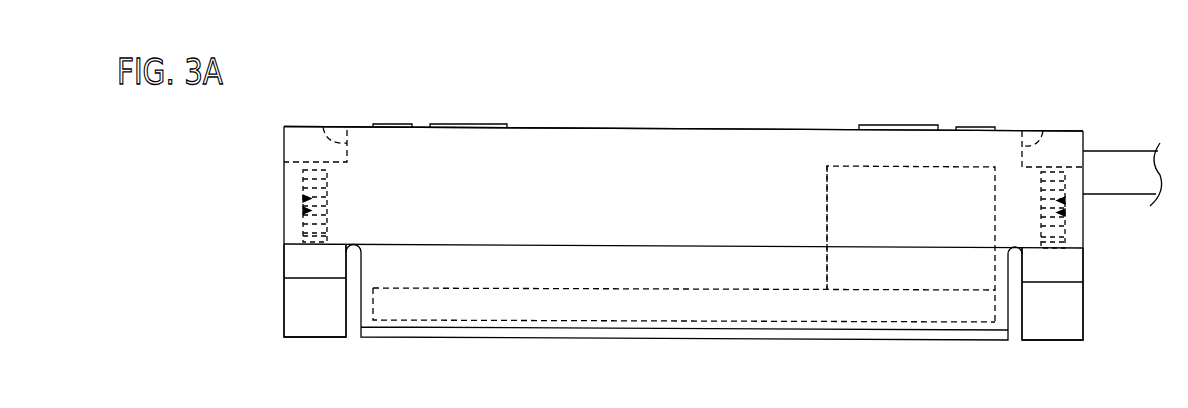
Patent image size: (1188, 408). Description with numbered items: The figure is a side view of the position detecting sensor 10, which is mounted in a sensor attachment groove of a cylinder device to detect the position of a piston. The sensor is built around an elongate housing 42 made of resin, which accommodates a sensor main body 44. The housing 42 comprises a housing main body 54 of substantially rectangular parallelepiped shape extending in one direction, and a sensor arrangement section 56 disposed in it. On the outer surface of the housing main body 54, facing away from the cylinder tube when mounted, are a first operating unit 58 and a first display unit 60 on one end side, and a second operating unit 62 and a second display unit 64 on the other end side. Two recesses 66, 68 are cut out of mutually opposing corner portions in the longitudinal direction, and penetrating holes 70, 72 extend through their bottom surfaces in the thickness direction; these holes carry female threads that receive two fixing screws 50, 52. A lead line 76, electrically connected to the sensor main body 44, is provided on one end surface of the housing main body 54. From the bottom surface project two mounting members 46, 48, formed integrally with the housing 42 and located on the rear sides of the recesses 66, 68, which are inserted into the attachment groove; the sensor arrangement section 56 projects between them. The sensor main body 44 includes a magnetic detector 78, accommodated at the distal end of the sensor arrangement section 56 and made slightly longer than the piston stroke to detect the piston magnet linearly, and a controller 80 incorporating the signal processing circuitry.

The position detecting sensor 10 is at (214, 146).
The housing 42 is at (627, 120).
The sensor main body 44 is at (842, 162).
The mounting member 46 is at (298, 340).
The mounting member 48 is at (1035, 344).
The fixing screw 50 is at (303, 243).
The fixing screw 52 is at (1055, 245).
The housing main body 54 is at (686, 140).
The sensor arrangement section 56 is at (490, 338).
The first operating unit 58 is at (465, 124).
The first display unit 60 is at (392, 124).
The second operating unit 62 is at (895, 125).
The second display unit 64 is at (978, 127).
The recess 66 is at (323, 127).
The recess 68 is at (1043, 131).
The penetrating hole 70 is at (303, 213).
The penetrating hole 72 is at (1065, 213).
The lead line 76 is at (1117, 166).
The magnetic detector 78 is at (563, 320).
The controller 80 is at (827, 204).